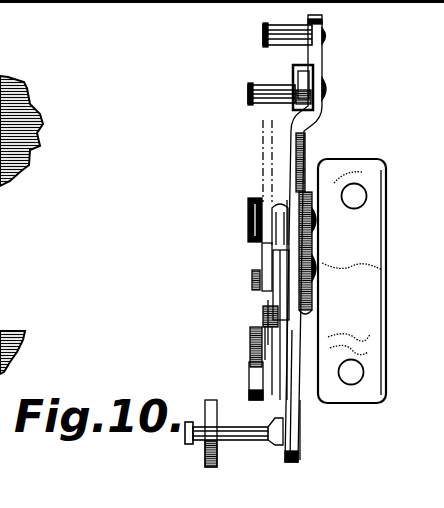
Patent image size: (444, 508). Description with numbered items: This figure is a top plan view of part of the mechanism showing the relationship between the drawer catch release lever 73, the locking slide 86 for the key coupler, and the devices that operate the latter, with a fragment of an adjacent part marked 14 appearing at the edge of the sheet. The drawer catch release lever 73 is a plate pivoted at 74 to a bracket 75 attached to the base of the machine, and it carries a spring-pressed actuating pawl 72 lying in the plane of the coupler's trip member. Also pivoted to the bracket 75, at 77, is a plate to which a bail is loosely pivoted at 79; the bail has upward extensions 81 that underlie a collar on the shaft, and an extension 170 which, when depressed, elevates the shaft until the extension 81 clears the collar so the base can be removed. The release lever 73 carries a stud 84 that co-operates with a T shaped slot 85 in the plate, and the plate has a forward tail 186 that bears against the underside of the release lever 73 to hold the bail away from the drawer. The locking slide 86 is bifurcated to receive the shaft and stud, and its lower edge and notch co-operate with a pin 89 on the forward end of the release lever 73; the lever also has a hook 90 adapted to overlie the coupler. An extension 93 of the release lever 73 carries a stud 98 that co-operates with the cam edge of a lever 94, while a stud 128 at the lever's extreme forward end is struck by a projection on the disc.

The gear fragment 14 is at (21, 154).
The spring-pressed actuating pawl 72 is at (306, 83).
The drawer catch release lever 73 is at (302, 402).
The pivot 74 is at (250, 226).
The bracket 75 is at (352, 281).
The pivot 77 is at (273, 262).
The pivot 79 is at (234, 347).
The upward extensions 81 is at (256, 371).
The stud 84 is at (270, 315).
The T shaped slot 85 is at (270, 336).
The locking slide 86 is at (263, 173).
The pin 89 is at (255, 92).
The hook 90 is at (303, 178).
The extension 93 is at (298, 447).
The lever 94 is at (214, 451).
The stud 98 is at (220, 440).
The stud 128 is at (266, 35).
The extension 170 is at (256, 252).
The tail 186 is at (278, 201).